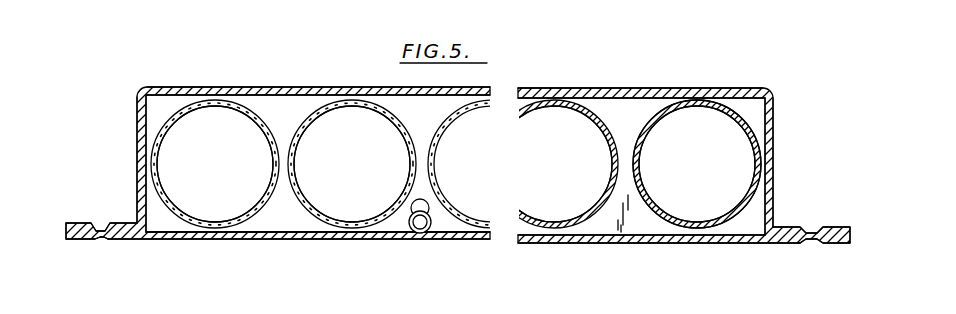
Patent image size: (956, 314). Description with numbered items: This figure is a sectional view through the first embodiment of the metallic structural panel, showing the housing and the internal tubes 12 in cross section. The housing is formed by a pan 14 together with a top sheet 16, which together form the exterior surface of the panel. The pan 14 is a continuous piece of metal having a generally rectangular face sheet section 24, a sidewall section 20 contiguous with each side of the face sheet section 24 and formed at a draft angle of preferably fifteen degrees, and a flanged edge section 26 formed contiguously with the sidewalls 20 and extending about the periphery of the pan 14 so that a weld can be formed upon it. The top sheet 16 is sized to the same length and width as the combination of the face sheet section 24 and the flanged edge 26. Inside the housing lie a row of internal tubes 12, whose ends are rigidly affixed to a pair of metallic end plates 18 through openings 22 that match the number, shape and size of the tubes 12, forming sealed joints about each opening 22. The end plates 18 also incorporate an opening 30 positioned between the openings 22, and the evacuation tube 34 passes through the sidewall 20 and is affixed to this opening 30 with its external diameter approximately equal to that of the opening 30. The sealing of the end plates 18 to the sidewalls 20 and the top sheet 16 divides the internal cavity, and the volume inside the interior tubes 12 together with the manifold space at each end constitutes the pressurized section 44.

The internal tubes 12 is at (650, 120).
The pan 14 is at (136, 131).
The top sheet 16 is at (158, 240).
The end plates 18 is at (278, 224).
The sidewall section 20 is at (137, 114).
The openings 22 is at (333, 120).
The face sheet section 24 is at (693, 98).
The flanged edge section 26 is at (78, 222).
The opening 30 is at (428, 210).
The evacuation tube 34 is at (410, 216).
The pressurized section 44 is at (215, 192).